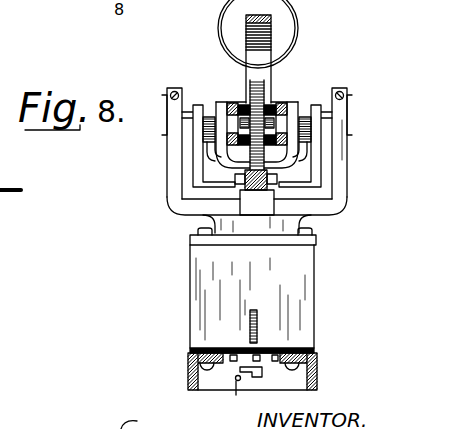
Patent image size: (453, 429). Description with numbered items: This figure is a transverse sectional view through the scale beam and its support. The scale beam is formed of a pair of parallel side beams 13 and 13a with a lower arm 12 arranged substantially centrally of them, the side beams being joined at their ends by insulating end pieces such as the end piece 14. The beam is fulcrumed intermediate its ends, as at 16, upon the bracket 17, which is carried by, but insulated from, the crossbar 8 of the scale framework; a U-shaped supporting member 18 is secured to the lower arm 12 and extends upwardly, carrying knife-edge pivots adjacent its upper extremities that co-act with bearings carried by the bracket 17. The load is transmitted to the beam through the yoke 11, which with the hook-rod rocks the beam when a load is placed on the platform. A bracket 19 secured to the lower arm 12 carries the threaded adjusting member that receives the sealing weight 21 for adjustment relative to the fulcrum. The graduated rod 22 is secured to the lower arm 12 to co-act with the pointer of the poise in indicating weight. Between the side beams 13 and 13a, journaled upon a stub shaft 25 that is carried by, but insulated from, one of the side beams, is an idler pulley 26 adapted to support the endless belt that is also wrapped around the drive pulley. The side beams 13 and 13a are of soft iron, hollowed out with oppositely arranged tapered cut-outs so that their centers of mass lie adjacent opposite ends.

The crossbar 8 is at (188, 367).
The yoke 11 is at (236, 192).
The lower arm 12 is at (287, 189).
The side beam 13 is at (280, 108).
The side beam 13a is at (237, 111).
The end piece 14 is at (244, 104).
The fulcrum 16 is at (165, 122).
The bracket 17 is at (191, 266).
The U-shaped supporting member 18 is at (195, 109).
The bracket 19 is at (222, 136).
The sealing weight 21 is at (278, 17).
The graduated rod 22 is at (241, 186).
The stub shaft 25 is at (244, 121).
The idler pulley 26 is at (266, 92).